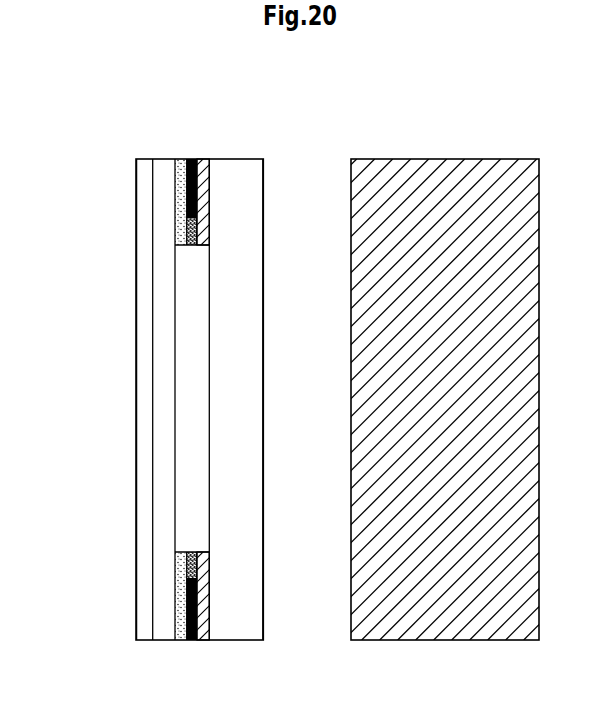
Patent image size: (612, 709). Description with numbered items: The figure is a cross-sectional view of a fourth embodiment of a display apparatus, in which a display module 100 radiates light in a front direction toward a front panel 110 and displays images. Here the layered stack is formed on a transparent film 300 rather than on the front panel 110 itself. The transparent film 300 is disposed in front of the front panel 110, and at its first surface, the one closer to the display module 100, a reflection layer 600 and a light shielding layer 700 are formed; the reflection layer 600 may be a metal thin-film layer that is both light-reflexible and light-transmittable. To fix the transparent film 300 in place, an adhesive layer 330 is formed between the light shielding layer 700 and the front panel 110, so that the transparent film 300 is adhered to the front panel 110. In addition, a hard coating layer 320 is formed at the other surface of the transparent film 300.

The display module 100 is at (448, 172).
The front panel 110 is at (262, 325).
The transparent film 300 is at (157, 432).
The hard coating layer 320 is at (141, 358).
The adhesive layer 330 is at (207, 180).
The reflection layer 600 is at (181, 158).
The light shielding layer 700 is at (192, 158).